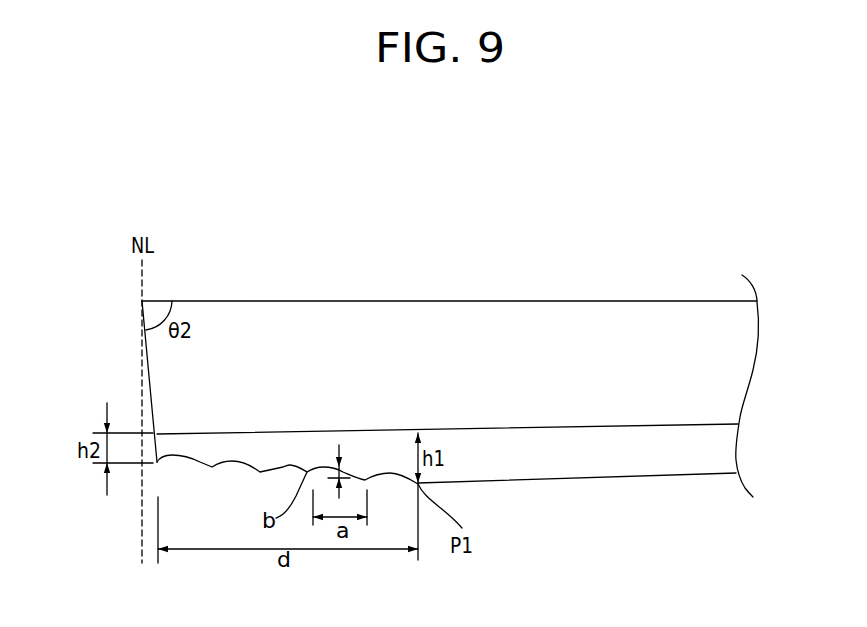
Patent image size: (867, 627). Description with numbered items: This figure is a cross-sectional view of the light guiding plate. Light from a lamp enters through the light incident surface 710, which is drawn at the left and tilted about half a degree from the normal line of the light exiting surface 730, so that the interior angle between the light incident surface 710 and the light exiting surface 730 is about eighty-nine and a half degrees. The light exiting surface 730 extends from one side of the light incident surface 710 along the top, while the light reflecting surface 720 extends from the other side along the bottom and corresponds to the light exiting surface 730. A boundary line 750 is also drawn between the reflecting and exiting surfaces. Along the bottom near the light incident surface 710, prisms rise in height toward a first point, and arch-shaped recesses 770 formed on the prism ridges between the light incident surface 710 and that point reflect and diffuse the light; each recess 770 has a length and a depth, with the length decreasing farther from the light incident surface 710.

The light incident surface 710 is at (149, 374).
The light reflecting surface 720 is at (555, 480).
The light exiting surface 730 is at (415, 301).
The intermediate layer boundary 750 is at (642, 460).
The recesses 770 is at (287, 467).